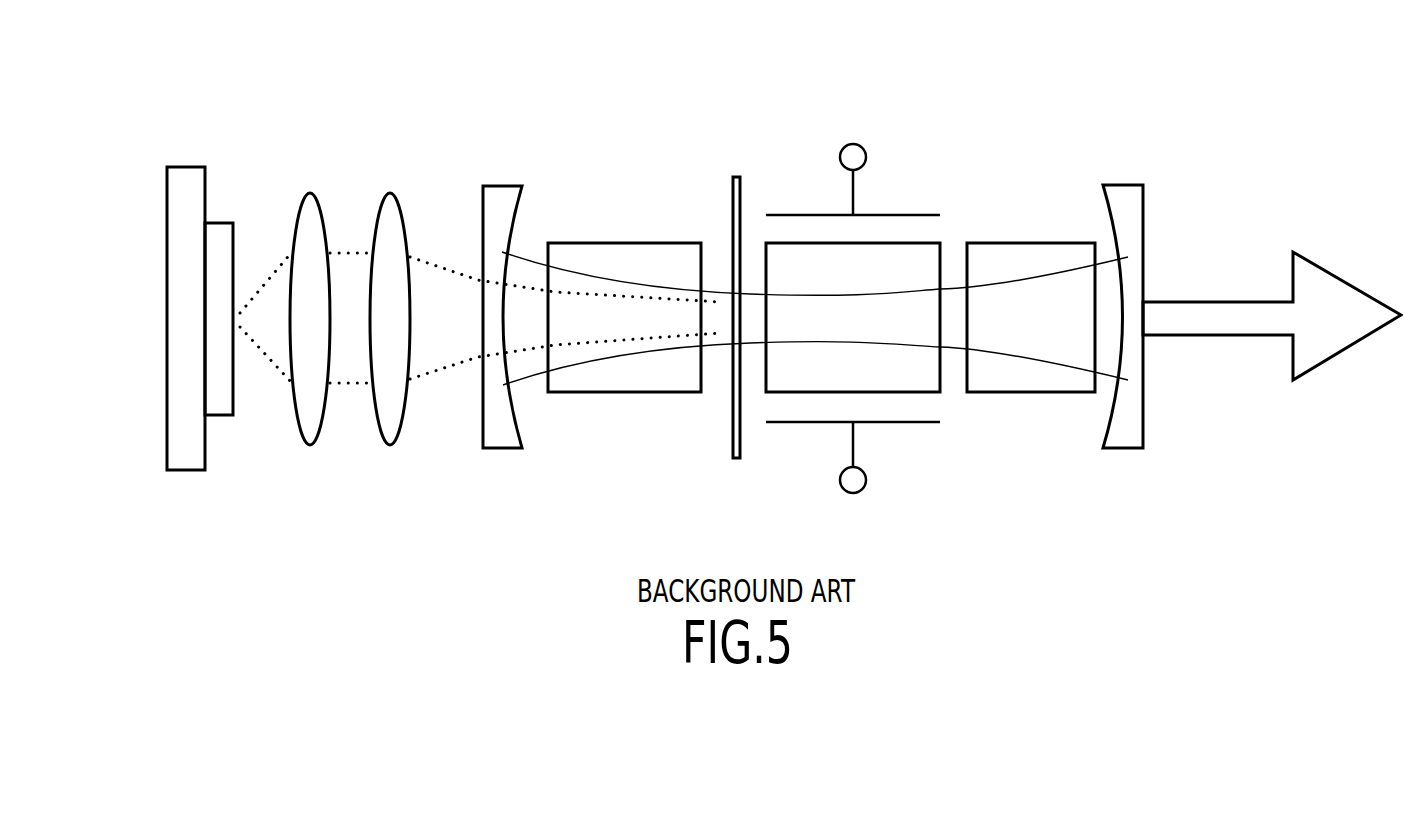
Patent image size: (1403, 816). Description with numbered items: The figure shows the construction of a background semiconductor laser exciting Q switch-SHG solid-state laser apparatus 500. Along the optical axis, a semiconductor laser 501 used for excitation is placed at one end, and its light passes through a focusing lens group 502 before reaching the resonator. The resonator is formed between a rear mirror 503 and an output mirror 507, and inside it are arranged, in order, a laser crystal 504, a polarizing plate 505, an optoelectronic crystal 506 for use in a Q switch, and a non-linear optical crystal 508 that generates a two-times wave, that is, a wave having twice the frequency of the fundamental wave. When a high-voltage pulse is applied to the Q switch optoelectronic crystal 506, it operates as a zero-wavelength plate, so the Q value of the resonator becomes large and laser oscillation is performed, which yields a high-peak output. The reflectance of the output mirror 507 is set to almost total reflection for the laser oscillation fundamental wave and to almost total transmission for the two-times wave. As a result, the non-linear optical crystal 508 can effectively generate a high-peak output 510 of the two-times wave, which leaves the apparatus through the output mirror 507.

The solid-state laser apparatus 500 is at (432, 158).
The semiconductor laser 501 is at (193, 470).
The focusing lens group 502 is at (347, 457).
The rear mirror 503 is at (500, 448).
The laser crystal 504 is at (640, 392).
The polarizing plate 505 is at (737, 458).
The optoelectronic crystal 506 is at (913, 422).
The output mirror 507 is at (1036, 392).
The non-linear optical crystal 508 is at (1127, 448).
The high-peak output 510 is at (1202, 335).